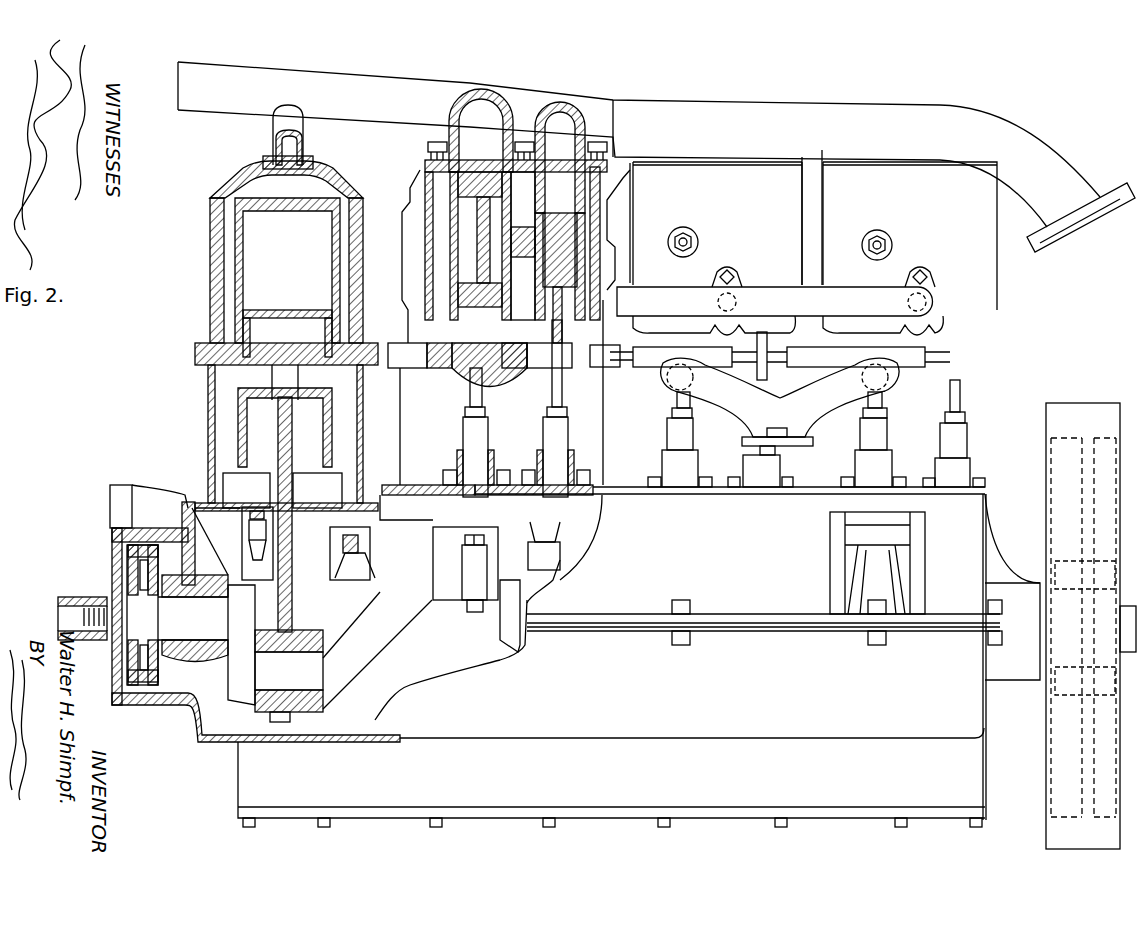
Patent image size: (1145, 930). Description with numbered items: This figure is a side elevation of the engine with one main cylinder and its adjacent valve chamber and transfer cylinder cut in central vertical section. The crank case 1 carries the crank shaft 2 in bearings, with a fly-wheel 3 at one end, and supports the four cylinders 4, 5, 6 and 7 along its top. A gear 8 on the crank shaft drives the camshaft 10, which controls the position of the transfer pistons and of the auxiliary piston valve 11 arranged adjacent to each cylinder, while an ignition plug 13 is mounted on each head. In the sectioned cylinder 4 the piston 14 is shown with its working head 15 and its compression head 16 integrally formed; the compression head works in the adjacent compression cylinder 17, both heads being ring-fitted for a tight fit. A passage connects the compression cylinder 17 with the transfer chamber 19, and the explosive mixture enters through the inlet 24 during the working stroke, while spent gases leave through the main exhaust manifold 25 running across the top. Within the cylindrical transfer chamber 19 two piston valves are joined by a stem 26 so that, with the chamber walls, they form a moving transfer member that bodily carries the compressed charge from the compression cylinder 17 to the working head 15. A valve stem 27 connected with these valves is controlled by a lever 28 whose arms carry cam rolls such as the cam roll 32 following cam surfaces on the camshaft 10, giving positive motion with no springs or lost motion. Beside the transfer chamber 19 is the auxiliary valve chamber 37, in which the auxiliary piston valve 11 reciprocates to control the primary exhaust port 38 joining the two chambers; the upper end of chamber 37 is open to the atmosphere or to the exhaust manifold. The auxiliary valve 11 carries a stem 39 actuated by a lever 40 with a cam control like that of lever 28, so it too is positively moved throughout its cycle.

The crank case 1 is at (639, 657).
The crank shaft 2 is at (385, 632).
The fly-wheel 3 is at (1053, 740).
The cylinder 4 is at (238, 261).
The cylinder 5 is at (413, 302).
The cylinder 6 is at (620, 217).
The cylinder 7 is at (820, 220).
The gear 8 is at (145, 577).
The camshaft 10 is at (378, 570).
The auxiliary piston valve 11 is at (590, 257).
The ignition plug 13 is at (698, 242).
The piston 14 is at (240, 433).
The working head 15 is at (278, 302).
The compression head 16 is at (340, 466).
The compression cylinder 17 is at (222, 386).
The transfer chamber 19 is at (465, 230).
The inlet 24 is at (673, 387).
The main exhaust manifold 25 is at (487, 108).
The stem 26 is at (427, 212).
The valve stem 27 is at (475, 392).
The lever 28 is at (254, 514).
The cam roll 32 is at (253, 567).
The auxiliary valve chamber 37 is at (566, 183).
The primary exhaust port 38 is at (503, 242).
The stem 39 is at (556, 387).
The lever 40 is at (355, 583).